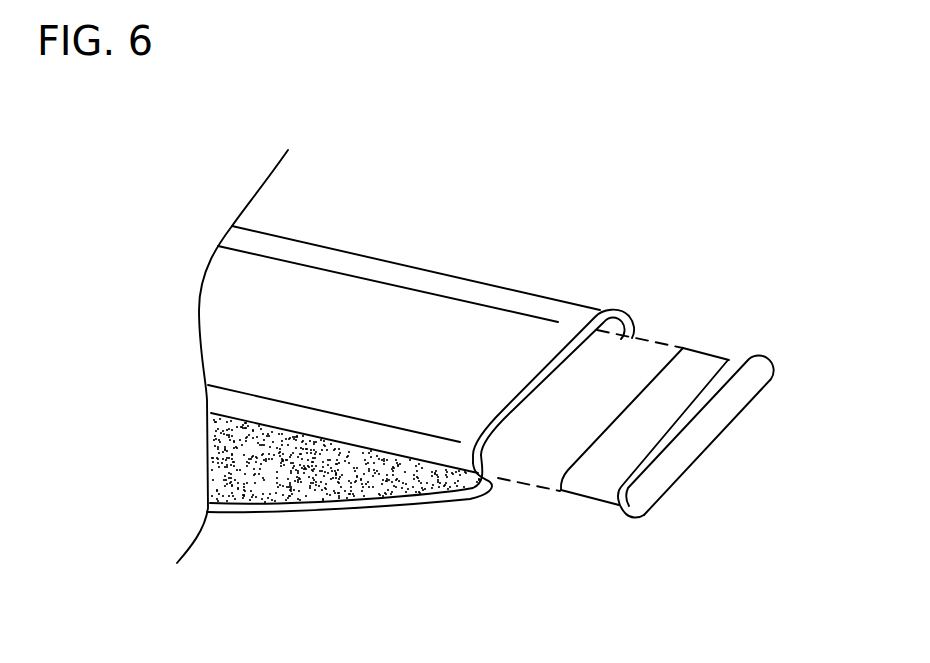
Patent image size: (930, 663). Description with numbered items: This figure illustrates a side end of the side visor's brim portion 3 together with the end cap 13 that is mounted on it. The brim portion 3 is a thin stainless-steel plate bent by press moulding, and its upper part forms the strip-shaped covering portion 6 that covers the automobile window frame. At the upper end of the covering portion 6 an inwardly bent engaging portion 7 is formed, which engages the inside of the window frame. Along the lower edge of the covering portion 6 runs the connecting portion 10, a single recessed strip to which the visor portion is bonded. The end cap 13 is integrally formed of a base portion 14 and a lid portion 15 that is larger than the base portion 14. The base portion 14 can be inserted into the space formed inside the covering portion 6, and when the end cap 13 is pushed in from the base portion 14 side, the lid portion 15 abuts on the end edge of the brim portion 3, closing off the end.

The brim portion 3 is at (383, 167).
The covering portion 6 is at (435, 305).
The engaging portion 7 is at (623, 314).
The connecting portion 10 is at (390, 503).
The end cap 13 is at (642, 565).
The base portion 14 is at (700, 363).
The lid portion 15 is at (720, 412).